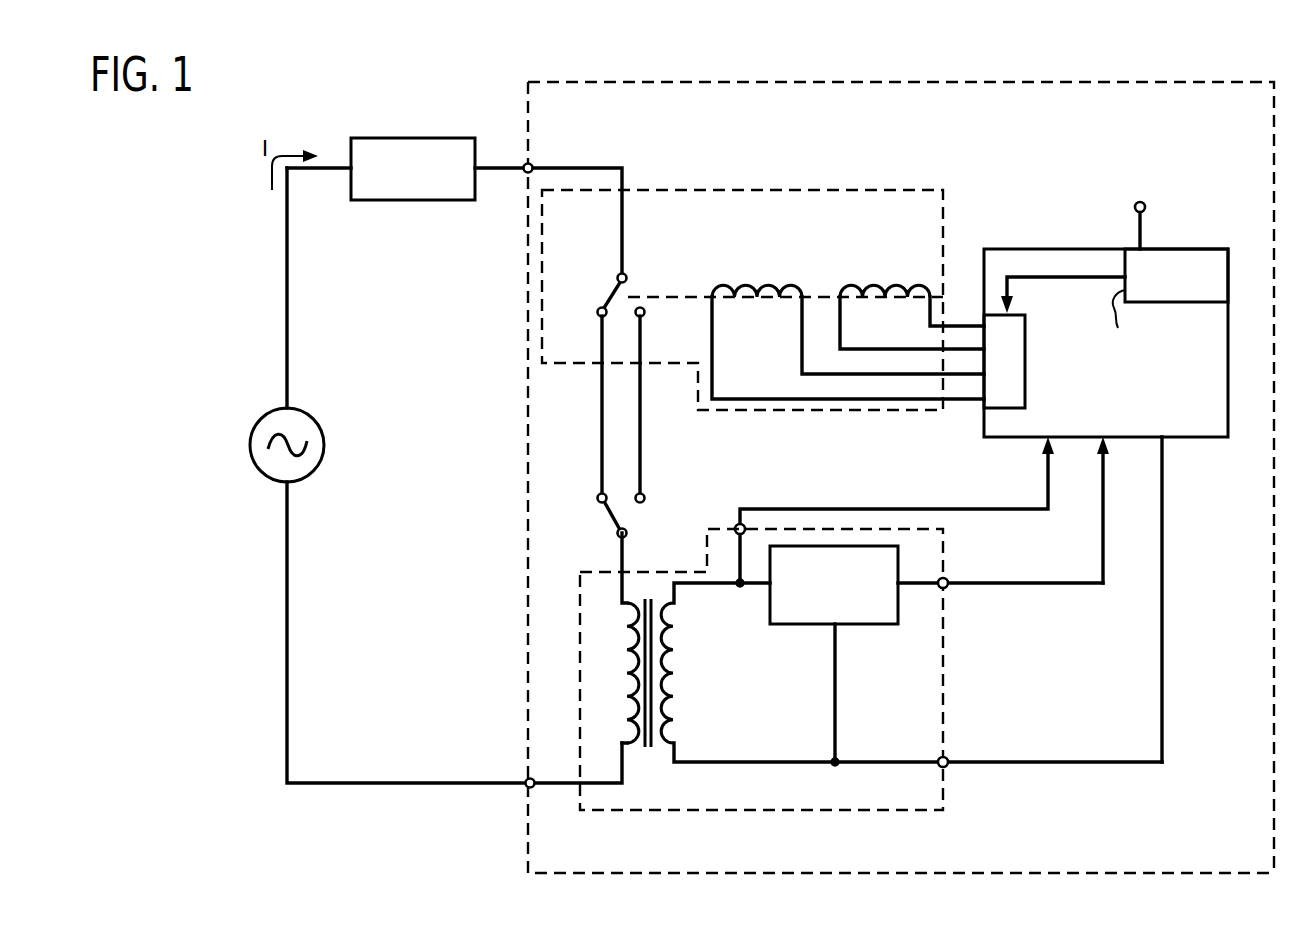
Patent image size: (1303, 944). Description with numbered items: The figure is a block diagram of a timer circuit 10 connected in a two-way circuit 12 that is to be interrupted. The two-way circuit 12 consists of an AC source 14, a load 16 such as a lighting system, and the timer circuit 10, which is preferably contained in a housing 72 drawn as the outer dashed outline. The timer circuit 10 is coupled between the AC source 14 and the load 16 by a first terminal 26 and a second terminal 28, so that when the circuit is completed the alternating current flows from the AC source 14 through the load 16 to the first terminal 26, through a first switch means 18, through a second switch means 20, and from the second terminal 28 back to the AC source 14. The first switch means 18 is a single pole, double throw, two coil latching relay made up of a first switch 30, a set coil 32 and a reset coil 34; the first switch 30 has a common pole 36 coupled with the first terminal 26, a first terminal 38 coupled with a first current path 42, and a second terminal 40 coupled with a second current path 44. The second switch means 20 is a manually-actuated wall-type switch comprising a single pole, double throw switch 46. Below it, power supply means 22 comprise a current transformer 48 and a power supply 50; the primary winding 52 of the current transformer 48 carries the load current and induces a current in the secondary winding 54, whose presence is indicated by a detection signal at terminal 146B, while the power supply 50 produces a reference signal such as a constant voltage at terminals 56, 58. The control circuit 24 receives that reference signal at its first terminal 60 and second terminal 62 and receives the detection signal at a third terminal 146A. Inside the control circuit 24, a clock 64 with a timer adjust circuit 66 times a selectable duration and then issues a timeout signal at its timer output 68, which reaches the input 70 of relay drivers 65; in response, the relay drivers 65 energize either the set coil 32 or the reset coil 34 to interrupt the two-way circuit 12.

The timer circuit 10 is at (658, 80).
The two-way circuit 12 is at (454, 115).
The AC source 14 is at (258, 422).
The load 16 is at (400, 138).
The first switch means 18 is at (661, 197).
The second switch means 20 is at (598, 521).
The power supply means 22 is at (828, 820).
The control circuit 24 is at (1060, 249).
The first terminal 26 is at (532, 162).
The second terminal 28 is at (527, 778).
The first switch 30 is at (636, 288).
The set coil 32 is at (724, 296).
The reset coil 34 is at (850, 296).
The common terminal or pole 36 is at (618, 276).
The first terminal of first switch 38 is at (598, 312).
The second terminal of first switch 40 is at (644, 314).
The first current path 42 is at (601, 430).
The second current path 44 is at (643, 404).
The single pole, double throw switch 46 is at (630, 524).
The current transformer 48 is at (648, 746).
The power supply 50 is at (810, 624).
The primary winding 52 is at (636, 678).
The secondary winding 54 is at (664, 736).
The power supply terminal 56 is at (947, 588).
The power supply terminal 58 is at (947, 756).
The first terminal of control means 60 is at (1106, 446).
The second terminal of control means 62 is at (1165, 446).
The clock 64 is at (1168, 250).
The relay drivers 65 is at (1030, 403).
The timer adjust circuit 66 is at (1134, 207).
The timer output 68 is at (1123, 317).
The input 70 is at (1012, 310).
The housing 72 is at (1028, 82).
The third terminal 146A is at (1044, 444).
The detection signal terminal 146B is at (738, 524).